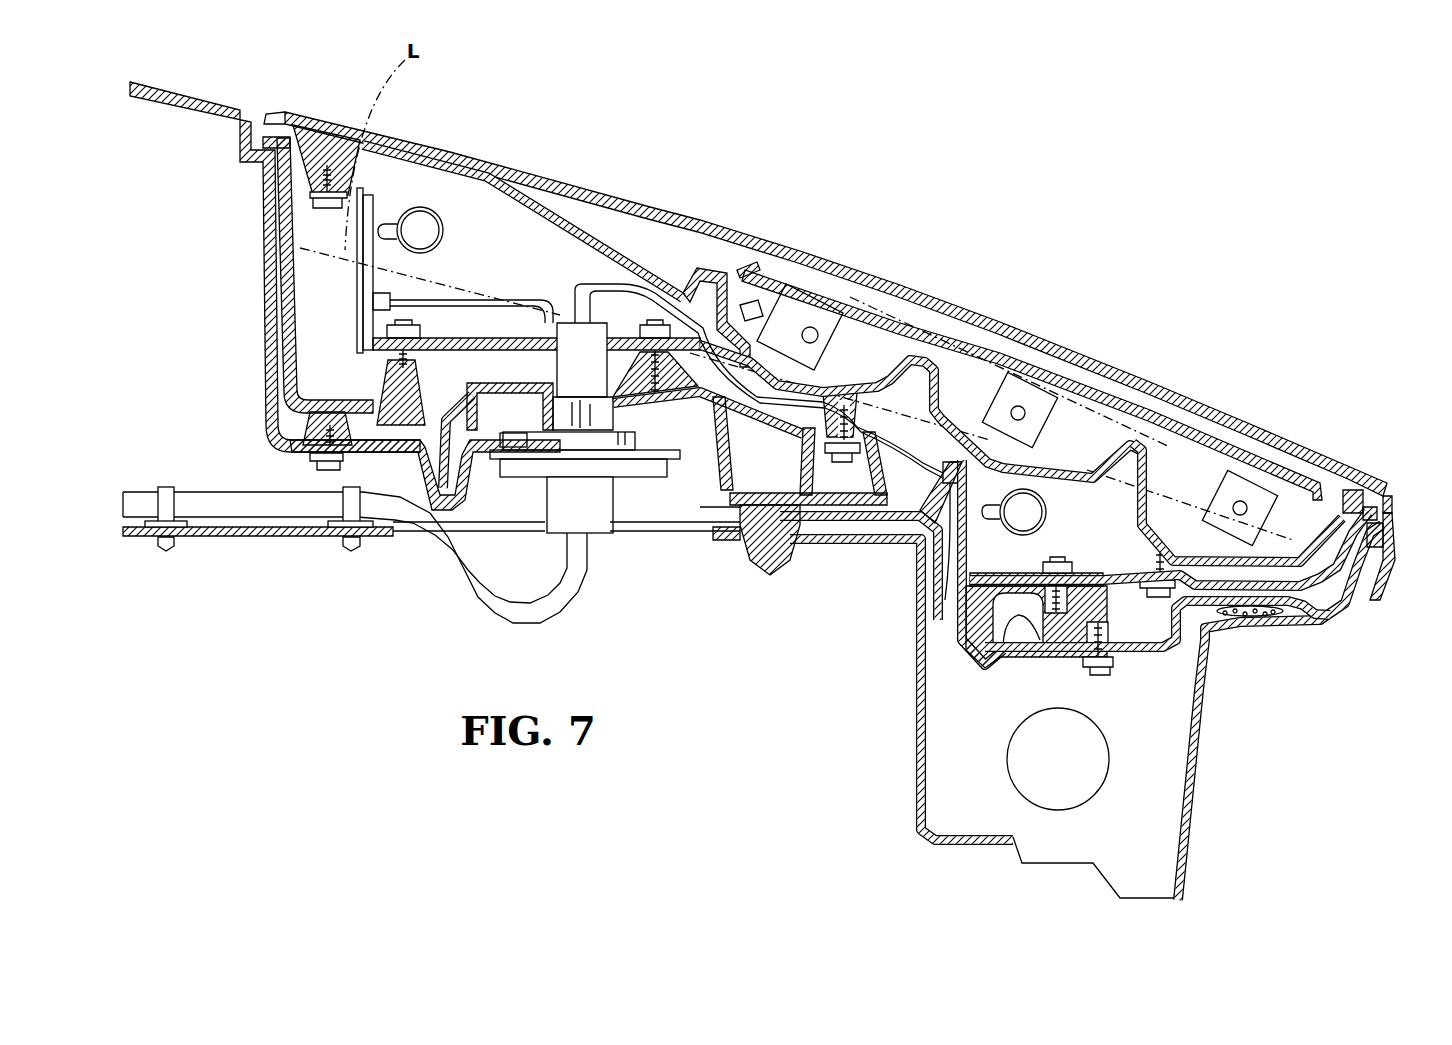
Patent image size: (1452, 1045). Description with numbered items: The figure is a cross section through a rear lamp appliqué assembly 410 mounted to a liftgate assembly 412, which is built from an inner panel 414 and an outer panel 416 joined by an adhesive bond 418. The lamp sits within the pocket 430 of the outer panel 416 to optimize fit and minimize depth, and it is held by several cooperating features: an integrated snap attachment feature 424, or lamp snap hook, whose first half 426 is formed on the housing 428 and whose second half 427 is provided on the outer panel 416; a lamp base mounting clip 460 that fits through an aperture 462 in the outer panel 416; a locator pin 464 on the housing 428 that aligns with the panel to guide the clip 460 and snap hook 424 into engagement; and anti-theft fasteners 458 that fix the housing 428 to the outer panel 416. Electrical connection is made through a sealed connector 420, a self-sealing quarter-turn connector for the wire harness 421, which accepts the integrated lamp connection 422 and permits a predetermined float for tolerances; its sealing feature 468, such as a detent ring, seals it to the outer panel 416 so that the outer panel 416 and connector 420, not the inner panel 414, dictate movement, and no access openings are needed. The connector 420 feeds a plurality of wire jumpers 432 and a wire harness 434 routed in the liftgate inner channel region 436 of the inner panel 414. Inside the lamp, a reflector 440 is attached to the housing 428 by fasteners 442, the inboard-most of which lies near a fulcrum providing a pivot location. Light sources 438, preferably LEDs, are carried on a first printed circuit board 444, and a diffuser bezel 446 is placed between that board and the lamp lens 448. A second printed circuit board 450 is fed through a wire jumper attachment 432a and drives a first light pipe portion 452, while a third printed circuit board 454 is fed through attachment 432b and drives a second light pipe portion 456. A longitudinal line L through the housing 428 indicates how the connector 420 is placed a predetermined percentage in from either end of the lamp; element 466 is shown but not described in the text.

The rear lamp appliqué assembly 410 is at (1110, 228).
The liftgate assembly 412 is at (1202, 862).
The inner panel 414 is at (233, 540).
The outer panel 416 is at (268, 303).
The adhesive bond 418 is at (1250, 615).
The sealed connector 420 is at (627, 490).
The wire harness 421 is at (460, 580).
The integrated lamp connection 422 is at (633, 427).
The integrated snap attachment feature 424 is at (1370, 557).
The first half of integrated snap feature 426 is at (1353, 508).
The second half of integrated snap feature 427 is at (1383, 535).
The housing 428 is at (1313, 573).
The pocket 430 is at (1387, 513).
The wire jumpers 432 is at (580, 298).
The wire jumper attachment 432a is at (373, 303).
The wire jumper attachment 432b is at (920, 527).
The wire harness 434 is at (1058, 811).
The liftgate inner channel region 436 is at (1145, 877).
The light source 438 is at (812, 328).
The reflector 440 is at (700, 275).
The fasteners 442 is at (323, 222).
The first printed circuit board 444 is at (803, 318).
The diffuser bezel 446 is at (955, 325).
The lamp lens 448 is at (1075, 345).
The second printed circuit board 450 is at (373, 283).
The first light pipe portion 452 is at (447, 227).
The third printed circuit board 454 is at (973, 560).
The second light pipe portion 456 is at (1050, 503).
The anti-theft fasteners 458 is at (317, 483).
The lamp base mounting clip 460 is at (797, 550).
The aperture 462 is at (790, 547).
The locator pin 464 is at (963, 657).
The bracket 466 is at (987, 633).
The sealing feature 468 is at (520, 433).